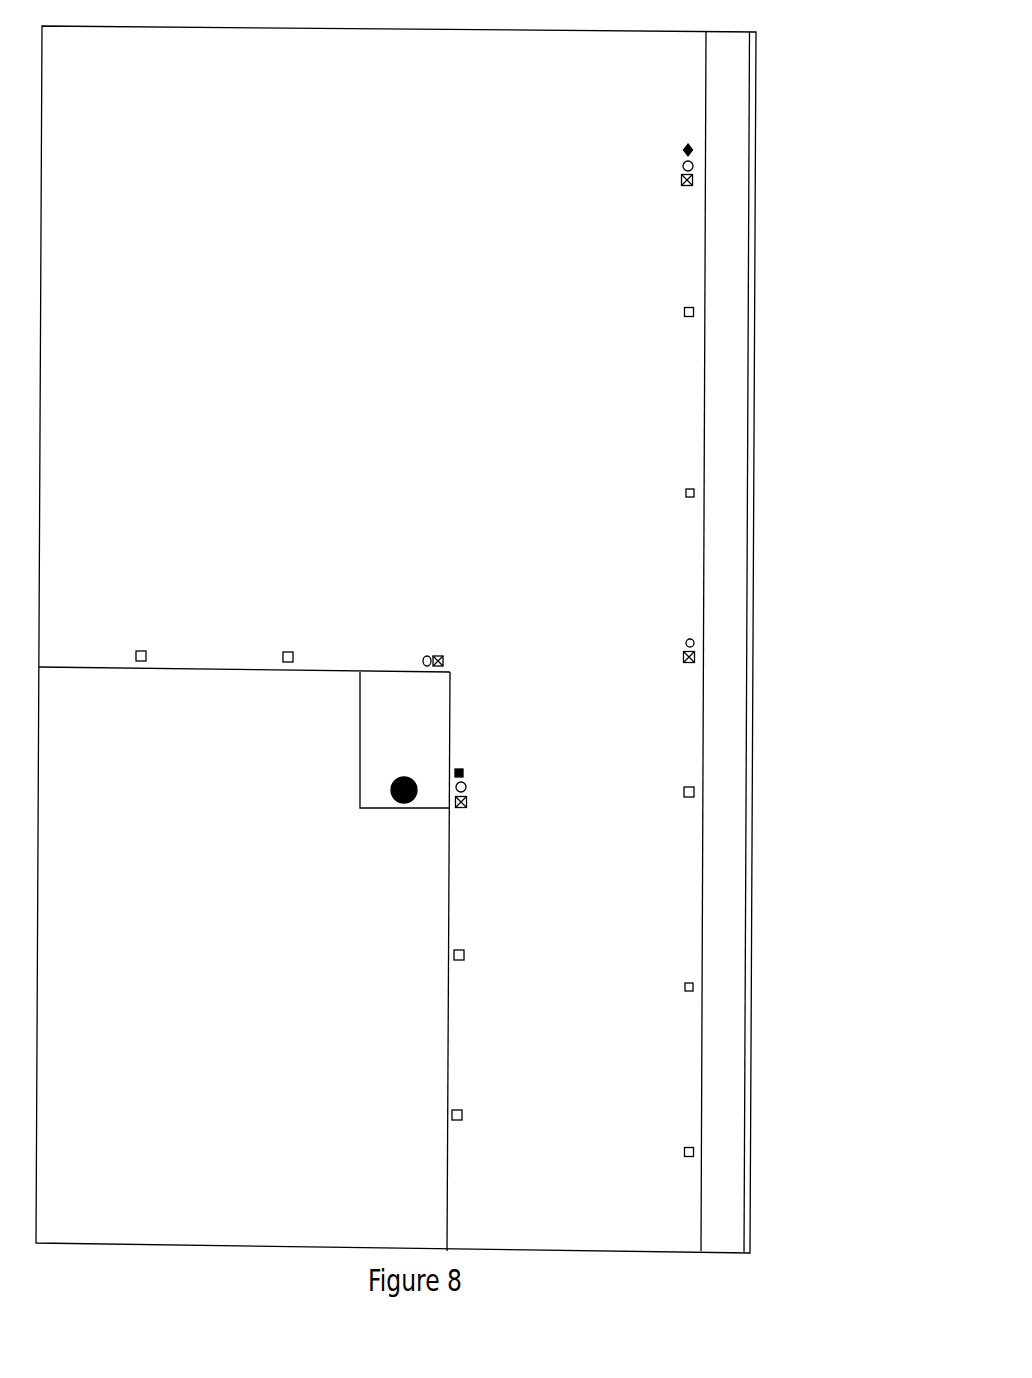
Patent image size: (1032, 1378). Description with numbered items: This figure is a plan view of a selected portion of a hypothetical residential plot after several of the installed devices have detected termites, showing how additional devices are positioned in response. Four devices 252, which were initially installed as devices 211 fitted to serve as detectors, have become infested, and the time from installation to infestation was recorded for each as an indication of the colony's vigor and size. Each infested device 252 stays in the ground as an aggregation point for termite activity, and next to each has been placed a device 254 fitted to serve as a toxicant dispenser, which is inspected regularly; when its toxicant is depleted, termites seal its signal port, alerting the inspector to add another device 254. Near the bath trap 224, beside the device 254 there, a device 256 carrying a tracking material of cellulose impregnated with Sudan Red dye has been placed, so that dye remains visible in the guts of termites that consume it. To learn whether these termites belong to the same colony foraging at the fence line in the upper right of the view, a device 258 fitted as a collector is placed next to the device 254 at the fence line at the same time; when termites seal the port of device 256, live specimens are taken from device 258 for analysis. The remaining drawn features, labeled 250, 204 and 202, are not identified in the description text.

The display screen 250 is at (459, 631).
The device fitted to serve as a collector 258 is at (623, 144).
The device fitted to serve as a toxicant dispenser 254 is at (681, 167).
The infested device 252 is at (564, 498).
The boundary line 204 is at (703, 721).
The bath trap 224 is at (486, 764).
The device fitted with a tracking material 256 is at (466, 773).
The device fitted to serve as a detector 211 is at (518, 941).
The region edge 202 is at (514, 961).